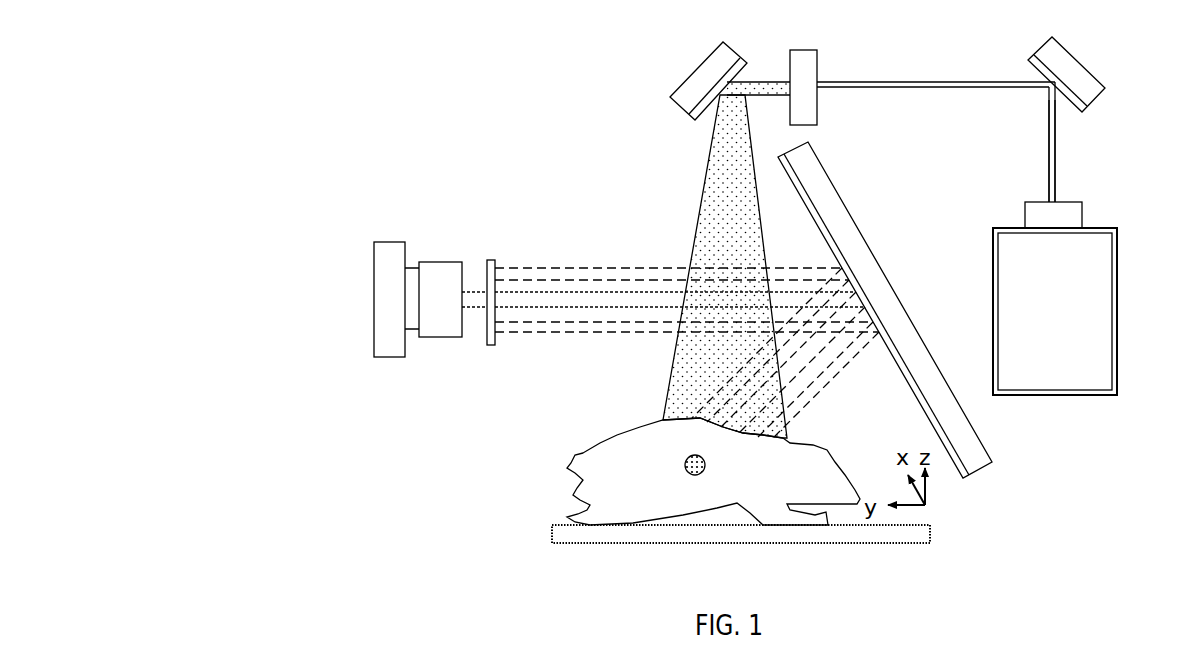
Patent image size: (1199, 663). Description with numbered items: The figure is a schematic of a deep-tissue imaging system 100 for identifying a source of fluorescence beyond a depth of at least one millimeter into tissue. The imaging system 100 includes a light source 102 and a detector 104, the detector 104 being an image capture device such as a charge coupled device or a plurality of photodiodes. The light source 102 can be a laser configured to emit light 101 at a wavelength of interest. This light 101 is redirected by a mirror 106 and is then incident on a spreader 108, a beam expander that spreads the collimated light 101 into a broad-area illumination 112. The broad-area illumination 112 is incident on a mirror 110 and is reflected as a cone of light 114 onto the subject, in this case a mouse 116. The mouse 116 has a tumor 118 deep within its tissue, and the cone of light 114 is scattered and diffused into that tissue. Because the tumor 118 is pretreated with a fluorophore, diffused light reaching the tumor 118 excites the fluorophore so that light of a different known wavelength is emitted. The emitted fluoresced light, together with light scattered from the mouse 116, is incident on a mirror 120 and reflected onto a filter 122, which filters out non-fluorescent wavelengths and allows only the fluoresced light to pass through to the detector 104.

The deep-tissue imaging system 100 is at (188, 124).
The light 101 is at (1056, 160).
The light source 102 is at (1110, 228).
The detector 104 is at (385, 242).
The mirror 106 is at (1052, 37).
The spreader 108 is at (817, 50).
The mirror 110 is at (724, 43).
The broad-area illumination 112 is at (733, 96).
The cone of light 114 is at (757, 250).
The mouse 116 is at (823, 450).
The tumor 118 is at (706, 462).
The mirror 120 is at (840, 192).
The filter 122 is at (495, 262).